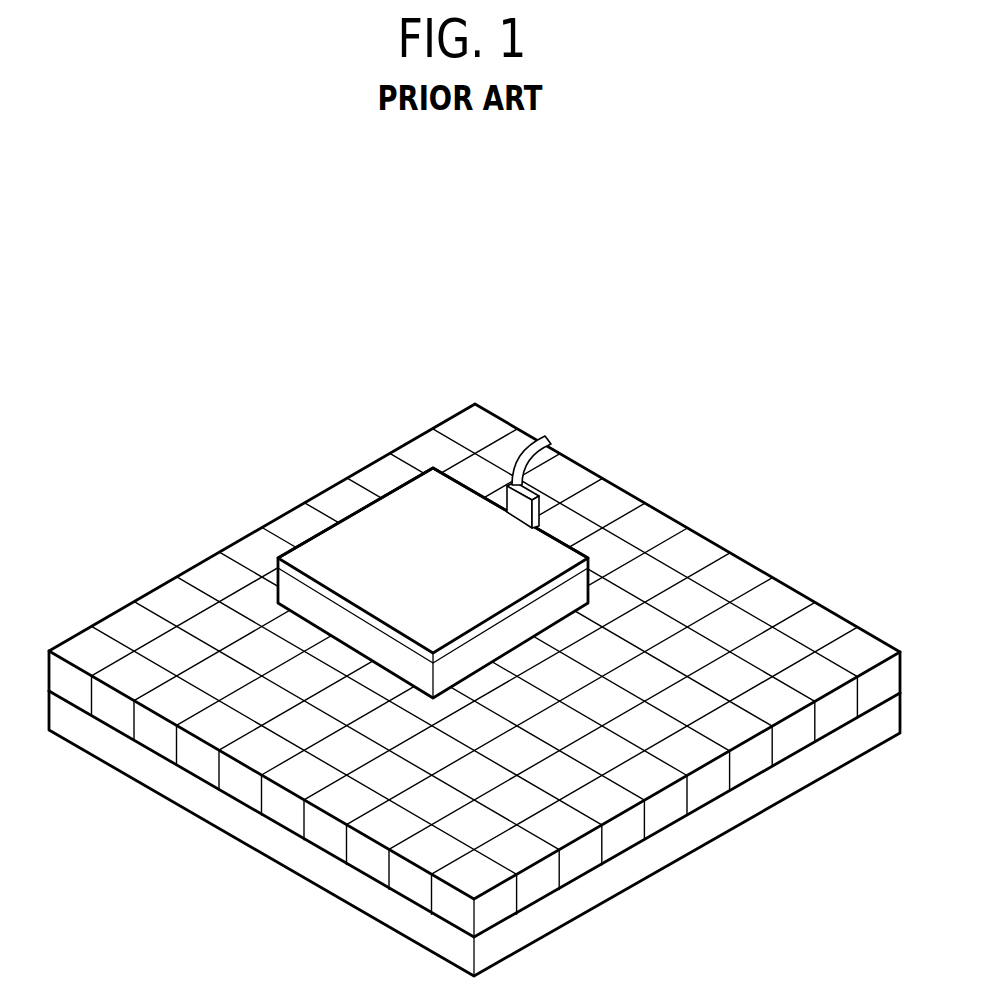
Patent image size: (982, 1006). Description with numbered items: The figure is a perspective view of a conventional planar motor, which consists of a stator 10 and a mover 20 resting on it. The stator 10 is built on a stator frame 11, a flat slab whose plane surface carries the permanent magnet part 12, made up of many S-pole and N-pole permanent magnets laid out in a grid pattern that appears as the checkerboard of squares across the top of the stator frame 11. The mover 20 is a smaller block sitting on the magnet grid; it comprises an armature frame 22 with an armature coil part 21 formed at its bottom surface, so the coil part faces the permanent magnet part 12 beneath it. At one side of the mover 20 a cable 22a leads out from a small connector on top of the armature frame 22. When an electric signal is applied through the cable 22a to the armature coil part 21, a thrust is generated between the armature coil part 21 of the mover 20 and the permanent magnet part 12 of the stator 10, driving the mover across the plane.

The stator 10 is at (473, 690).
The stator frame 11 is at (676, 845).
The permanent magnet part 12 is at (165, 625).
The mover 20 is at (481, 521).
The armature coil part 21 is at (568, 592).
The armature frame 22 is at (373, 520).
The cable 22a is at (553, 440).